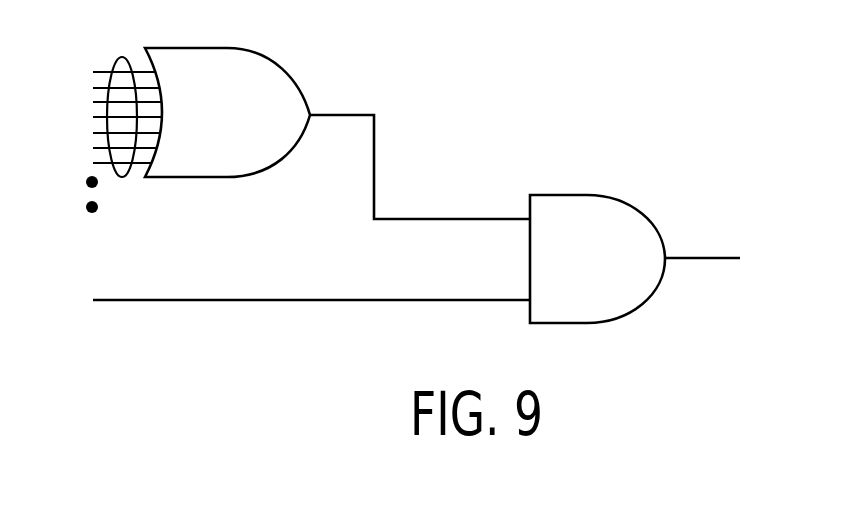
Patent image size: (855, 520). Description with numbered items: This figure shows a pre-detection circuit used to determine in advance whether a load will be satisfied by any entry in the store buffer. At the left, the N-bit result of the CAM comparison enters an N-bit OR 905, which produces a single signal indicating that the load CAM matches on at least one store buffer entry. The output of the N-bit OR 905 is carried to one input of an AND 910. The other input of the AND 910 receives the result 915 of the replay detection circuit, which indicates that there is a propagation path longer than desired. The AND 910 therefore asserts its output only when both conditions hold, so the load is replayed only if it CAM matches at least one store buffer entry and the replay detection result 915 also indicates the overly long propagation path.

The N-bit OR 905 is at (250, 131).
The AND 910 is at (617, 272).
The result of the replay detection circuit 915 is at (307, 304).